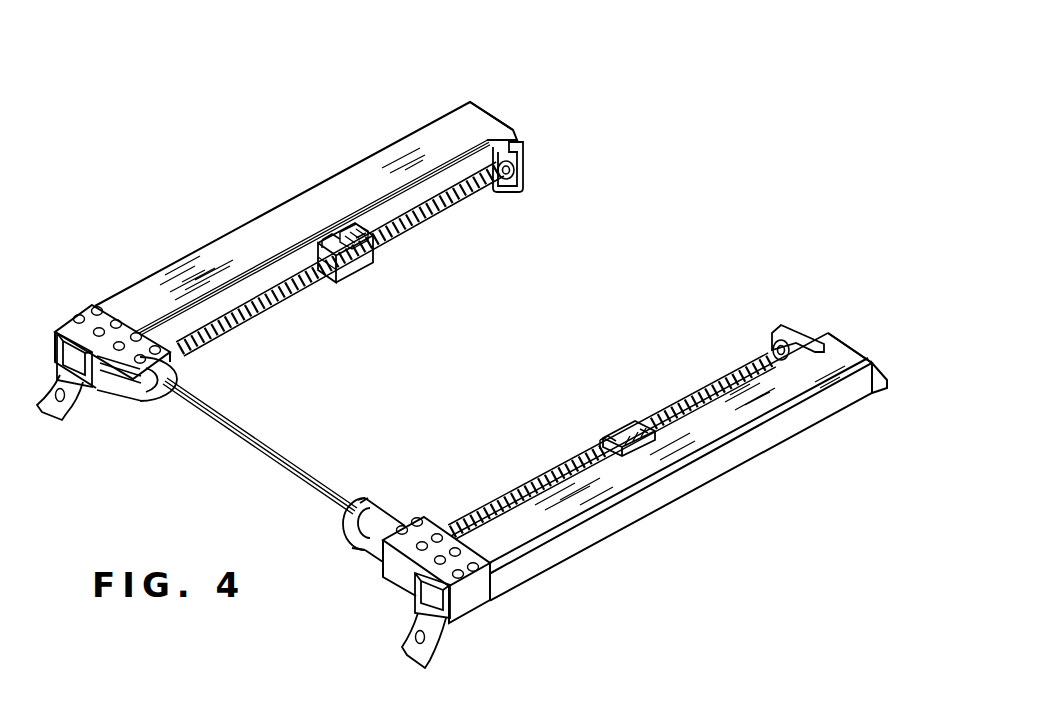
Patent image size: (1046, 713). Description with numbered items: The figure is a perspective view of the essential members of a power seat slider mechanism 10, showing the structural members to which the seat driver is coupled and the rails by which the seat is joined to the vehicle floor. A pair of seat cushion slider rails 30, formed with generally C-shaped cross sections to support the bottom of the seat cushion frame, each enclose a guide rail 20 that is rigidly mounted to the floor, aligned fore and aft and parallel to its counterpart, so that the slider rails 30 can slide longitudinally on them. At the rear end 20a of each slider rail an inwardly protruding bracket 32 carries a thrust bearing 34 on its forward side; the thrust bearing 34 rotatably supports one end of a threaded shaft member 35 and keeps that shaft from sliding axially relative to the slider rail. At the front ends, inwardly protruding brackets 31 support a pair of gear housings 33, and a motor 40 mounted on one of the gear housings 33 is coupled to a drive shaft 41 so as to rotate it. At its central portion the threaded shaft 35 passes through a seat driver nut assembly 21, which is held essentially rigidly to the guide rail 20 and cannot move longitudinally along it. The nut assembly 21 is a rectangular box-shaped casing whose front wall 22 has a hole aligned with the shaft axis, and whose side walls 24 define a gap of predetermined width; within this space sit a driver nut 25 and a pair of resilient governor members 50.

The positioning table assembly 10 is at (438, 381).
The guide rail 20 is at (68, 392).
The rear end 20a is at (476, 100).
The seat driver nut assembly 21 is at (481, 294).
The front wall 22 is at (332, 278).
The side walls 24 is at (364, 267).
The driver nut 25 is at (338, 237).
The seat cushion slider rail 30 is at (221, 236).
The bracket 31 is at (92, 304).
The bracket 32 is at (529, 174).
The gear housing 33 is at (118, 398).
The thrust bearing 34 is at (498, 186).
The threaded shaft member 35 is at (420, 227).
The motor 40 is at (376, 497).
The drive shaft 41 is at (253, 433).
The resilient governor member 50 is at (322, 238).